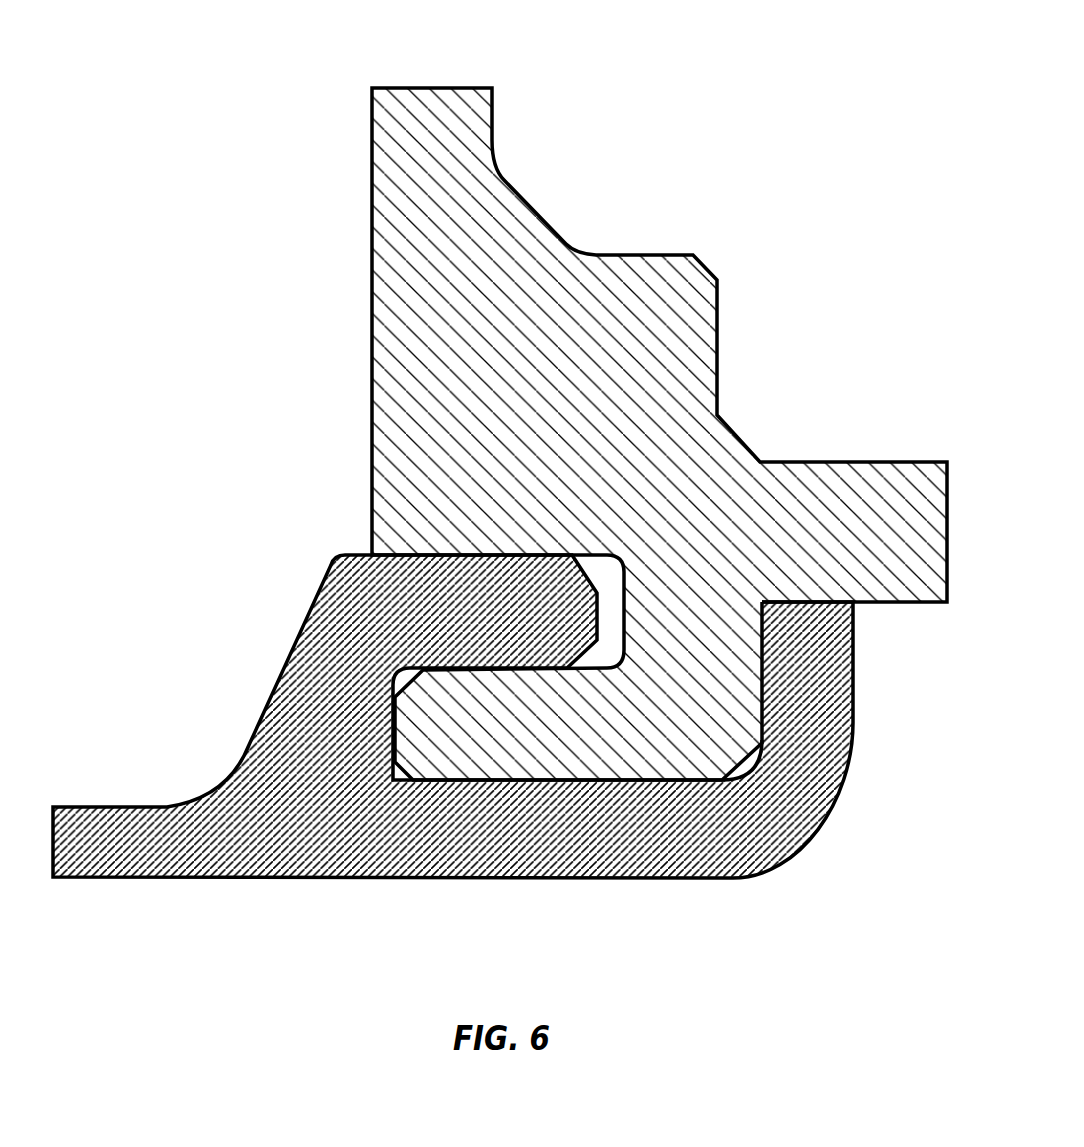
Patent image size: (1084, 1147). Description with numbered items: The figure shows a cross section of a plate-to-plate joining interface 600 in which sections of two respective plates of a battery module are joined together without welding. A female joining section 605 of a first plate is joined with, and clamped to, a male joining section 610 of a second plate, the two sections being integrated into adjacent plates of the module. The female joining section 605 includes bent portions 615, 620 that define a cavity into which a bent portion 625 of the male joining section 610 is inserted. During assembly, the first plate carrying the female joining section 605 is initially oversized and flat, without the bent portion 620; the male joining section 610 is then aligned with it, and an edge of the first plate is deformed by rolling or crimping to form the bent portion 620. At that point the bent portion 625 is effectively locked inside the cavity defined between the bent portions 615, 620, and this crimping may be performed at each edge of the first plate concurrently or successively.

The plate-to-plate joining interface 600 is at (816, 82).
The female joining section 605 is at (330, 890).
The male joining section 610 is at (543, 214).
The bent portion of the female joining section 615 is at (498, 610).
The bent portion of the female joining section 620 is at (811, 750).
The bent portion of the male joining section 625 is at (591, 725).